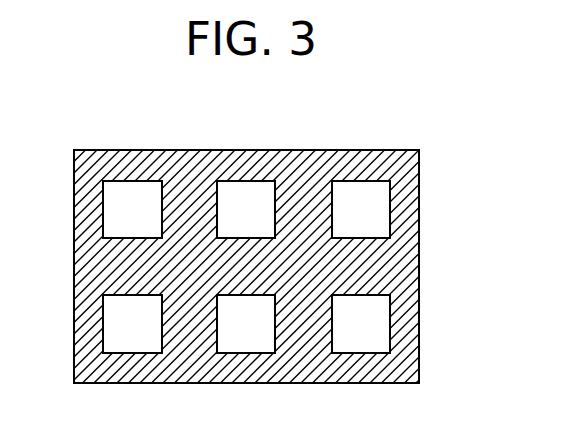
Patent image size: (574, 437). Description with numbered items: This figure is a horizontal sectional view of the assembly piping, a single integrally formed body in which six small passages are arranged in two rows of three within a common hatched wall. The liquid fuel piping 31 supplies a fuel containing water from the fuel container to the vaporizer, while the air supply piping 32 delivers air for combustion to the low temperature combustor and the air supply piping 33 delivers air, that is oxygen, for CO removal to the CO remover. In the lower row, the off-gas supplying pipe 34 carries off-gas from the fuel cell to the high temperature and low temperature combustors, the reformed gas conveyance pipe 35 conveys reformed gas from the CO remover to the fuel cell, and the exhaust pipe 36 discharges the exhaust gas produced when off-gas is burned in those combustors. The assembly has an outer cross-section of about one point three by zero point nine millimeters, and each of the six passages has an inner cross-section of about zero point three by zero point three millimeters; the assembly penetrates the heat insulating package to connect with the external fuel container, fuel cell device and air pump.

The liquid fuel piping 31 is at (132, 208).
The air supply piping 32 is at (245, 208).
The air supply piping 33 is at (362, 208).
The off-gas supplying pipe 34 is at (130, 325).
The reformed gas conveyance pipe 35 is at (245, 325).
The exhaust pipe 36 is at (360, 325).